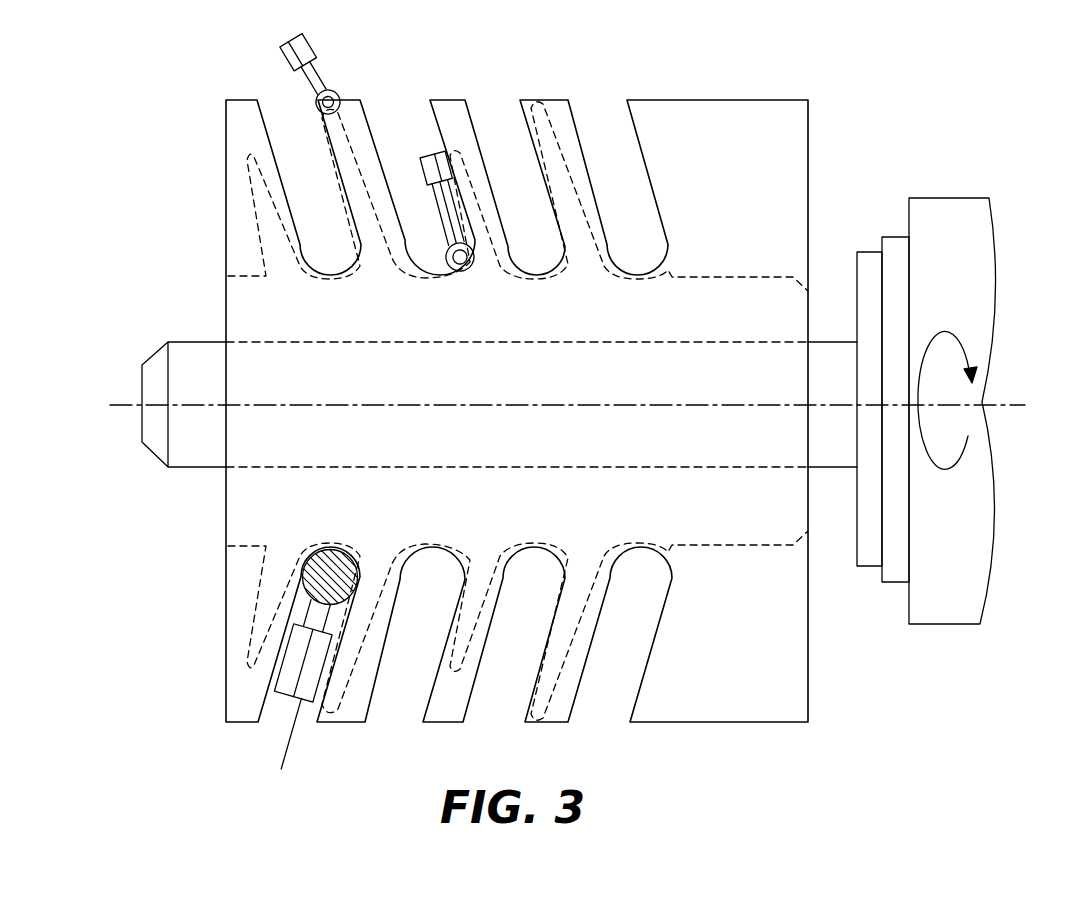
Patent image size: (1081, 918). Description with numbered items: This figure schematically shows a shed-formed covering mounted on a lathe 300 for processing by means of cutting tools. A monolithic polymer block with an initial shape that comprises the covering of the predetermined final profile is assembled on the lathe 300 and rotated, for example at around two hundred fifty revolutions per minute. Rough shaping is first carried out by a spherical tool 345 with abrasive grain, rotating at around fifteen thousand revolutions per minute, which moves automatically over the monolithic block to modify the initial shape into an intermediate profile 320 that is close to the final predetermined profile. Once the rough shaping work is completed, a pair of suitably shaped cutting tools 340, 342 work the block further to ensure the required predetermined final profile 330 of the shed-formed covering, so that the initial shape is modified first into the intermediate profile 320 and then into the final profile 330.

The lathe 300 is at (935, 225).
The intermediate profile 320 is at (775, 108).
The predetermined final profile 330 is at (563, 130).
The cutting tool 340 is at (427, 150).
The cutting tool 342 is at (308, 57).
The spherical tool 345 is at (278, 702).